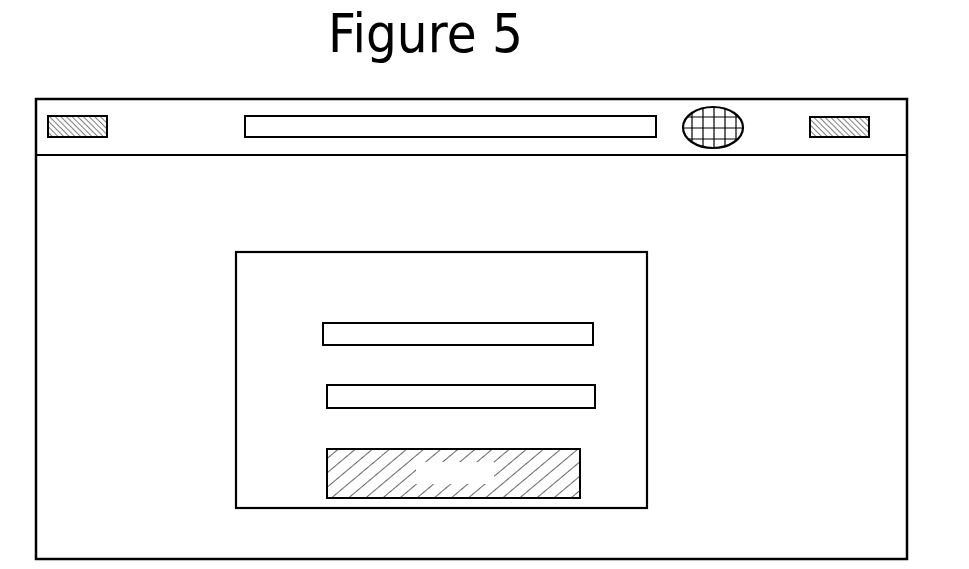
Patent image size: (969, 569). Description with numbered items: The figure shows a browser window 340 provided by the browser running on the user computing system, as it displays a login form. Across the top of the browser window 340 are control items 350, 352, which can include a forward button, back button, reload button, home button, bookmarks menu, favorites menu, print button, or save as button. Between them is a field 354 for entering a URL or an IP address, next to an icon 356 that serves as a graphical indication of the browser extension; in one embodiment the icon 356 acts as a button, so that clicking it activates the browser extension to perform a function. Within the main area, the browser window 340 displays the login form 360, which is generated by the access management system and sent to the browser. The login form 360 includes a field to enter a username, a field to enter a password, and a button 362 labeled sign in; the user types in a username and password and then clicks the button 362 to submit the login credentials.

The browser window 340 is at (167, 99).
The control item 350 is at (85, 116).
The control item 352 is at (831, 116).
The field 354 is at (579, 116).
The icon 356 is at (715, 108).
The login form 360 is at (580, 251).
The button 362 is at (547, 450).